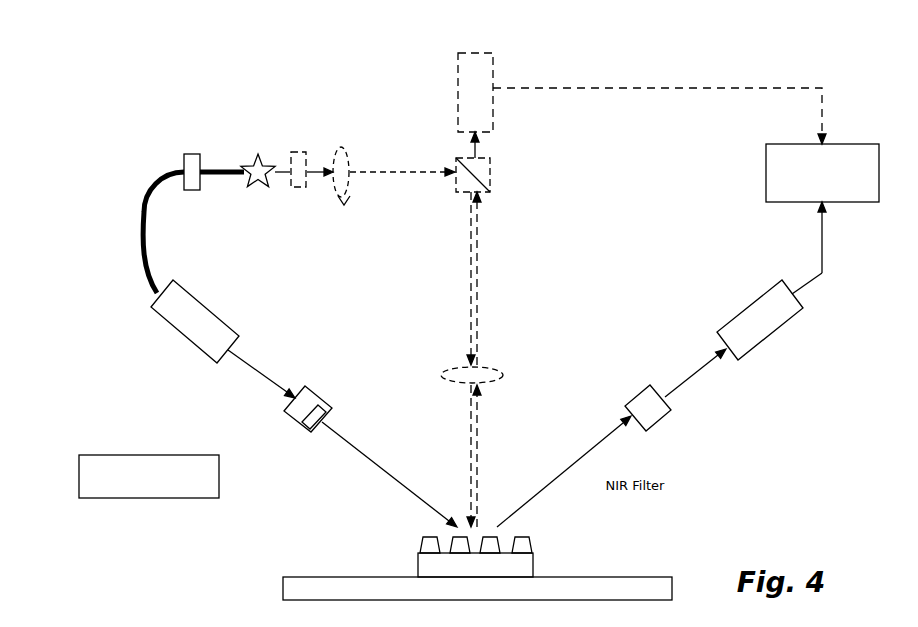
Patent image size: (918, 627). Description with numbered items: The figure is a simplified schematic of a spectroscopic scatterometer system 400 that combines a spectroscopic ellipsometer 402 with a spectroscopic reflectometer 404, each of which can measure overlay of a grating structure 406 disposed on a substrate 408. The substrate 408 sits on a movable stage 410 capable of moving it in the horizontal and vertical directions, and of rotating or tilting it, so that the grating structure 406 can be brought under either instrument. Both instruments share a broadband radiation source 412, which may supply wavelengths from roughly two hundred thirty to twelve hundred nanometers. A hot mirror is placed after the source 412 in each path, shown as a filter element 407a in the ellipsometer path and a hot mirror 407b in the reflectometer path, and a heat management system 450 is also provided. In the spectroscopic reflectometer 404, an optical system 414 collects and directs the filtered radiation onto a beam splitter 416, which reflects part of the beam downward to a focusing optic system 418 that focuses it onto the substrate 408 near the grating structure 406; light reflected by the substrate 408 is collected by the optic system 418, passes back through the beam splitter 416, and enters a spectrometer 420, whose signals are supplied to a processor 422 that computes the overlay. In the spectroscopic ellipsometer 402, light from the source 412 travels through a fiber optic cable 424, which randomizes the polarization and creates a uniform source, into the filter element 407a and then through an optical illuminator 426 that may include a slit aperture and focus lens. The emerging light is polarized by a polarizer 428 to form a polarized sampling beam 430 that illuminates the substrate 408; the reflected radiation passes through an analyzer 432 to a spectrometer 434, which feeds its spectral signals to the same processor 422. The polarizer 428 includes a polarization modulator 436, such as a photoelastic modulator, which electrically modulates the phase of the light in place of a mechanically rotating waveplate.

The spectroscopic scatterometer system 400 is at (172, 104).
The spectroscopic ellipsometer 402 is at (808, 430).
The spectroscopic reflectometer 404 is at (405, 198).
The grating structure 406 is at (497, 528).
The hot mirror (ellipsometer path) 407a is at (185, 156).
The hot mirror (reflectometer path) 407b is at (304, 152).
The substrate 408 is at (534, 556).
The movable stage 410 is at (656, 577).
The broadband radiation source 412 is at (262, 154).
The optical system 414 is at (342, 146).
The beam splitter 416 is at (460, 158).
The focusing optic system 418 is at (492, 368).
The spectrometer 420 is at (458, 80).
The processor 422 is at (766, 170).
The fiber optic cable 424 is at (135, 222).
The optical illuminator 426 is at (200, 284).
The polarizer 428 is at (316, 387).
The polarized sampling beam 430 is at (384, 471).
The analyzer 432 is at (640, 392).
The spectrometer 434 is at (746, 314).
The polarization modulator 436 is at (298, 434).
The heat management system 450 is at (171, 498).